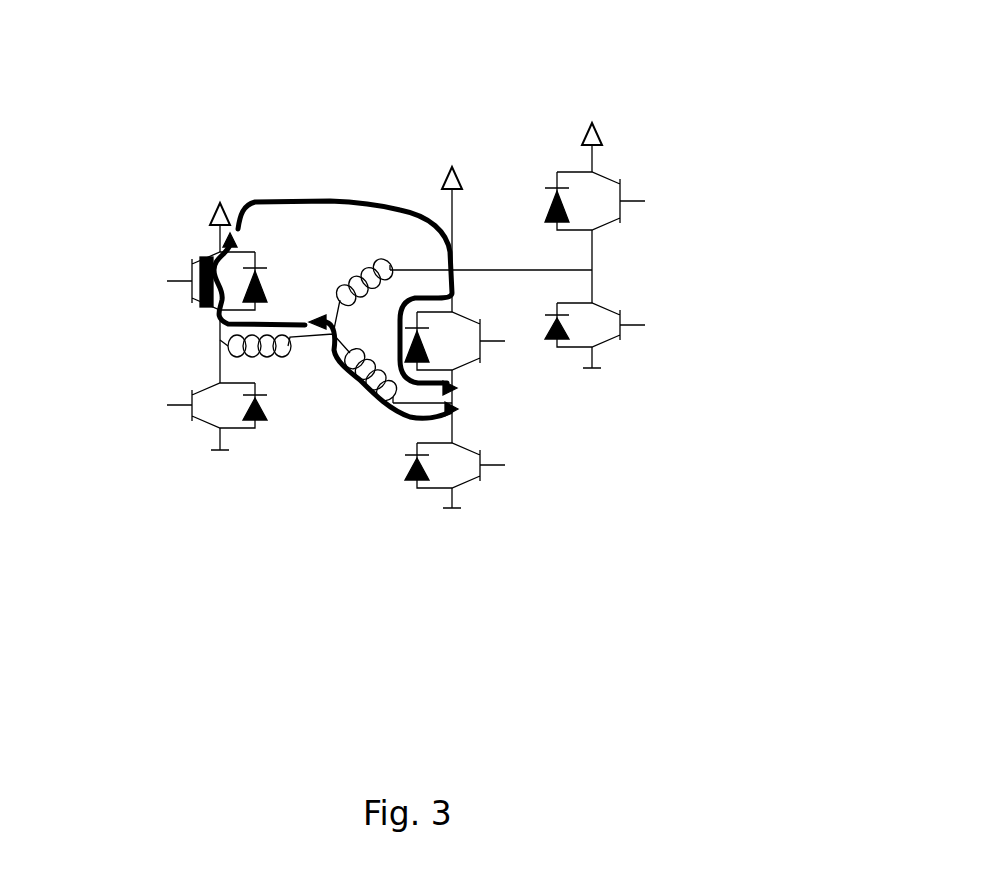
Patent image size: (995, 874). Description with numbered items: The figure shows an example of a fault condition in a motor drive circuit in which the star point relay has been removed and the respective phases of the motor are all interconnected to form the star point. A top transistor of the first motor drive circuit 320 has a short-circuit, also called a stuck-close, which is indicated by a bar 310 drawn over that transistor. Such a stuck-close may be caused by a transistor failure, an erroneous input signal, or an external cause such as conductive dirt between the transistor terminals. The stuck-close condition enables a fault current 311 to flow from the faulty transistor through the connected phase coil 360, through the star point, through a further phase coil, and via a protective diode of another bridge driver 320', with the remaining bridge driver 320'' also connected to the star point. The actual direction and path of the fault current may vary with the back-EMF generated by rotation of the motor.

The bar 310 is at (206, 252).
The fault current 311 is at (377, 205).
The first motor drive circuit 320 is at (185, 435).
The upper-arm switching element of the second phase 320' is at (541, 382).
The upper-arm switching element of the third phase 320'' is at (636, 134).
The inductor (motor winding) 360 is at (278, 345).